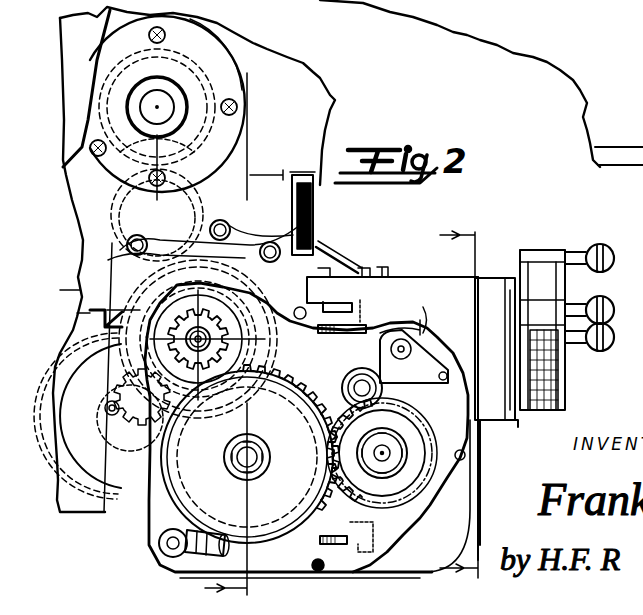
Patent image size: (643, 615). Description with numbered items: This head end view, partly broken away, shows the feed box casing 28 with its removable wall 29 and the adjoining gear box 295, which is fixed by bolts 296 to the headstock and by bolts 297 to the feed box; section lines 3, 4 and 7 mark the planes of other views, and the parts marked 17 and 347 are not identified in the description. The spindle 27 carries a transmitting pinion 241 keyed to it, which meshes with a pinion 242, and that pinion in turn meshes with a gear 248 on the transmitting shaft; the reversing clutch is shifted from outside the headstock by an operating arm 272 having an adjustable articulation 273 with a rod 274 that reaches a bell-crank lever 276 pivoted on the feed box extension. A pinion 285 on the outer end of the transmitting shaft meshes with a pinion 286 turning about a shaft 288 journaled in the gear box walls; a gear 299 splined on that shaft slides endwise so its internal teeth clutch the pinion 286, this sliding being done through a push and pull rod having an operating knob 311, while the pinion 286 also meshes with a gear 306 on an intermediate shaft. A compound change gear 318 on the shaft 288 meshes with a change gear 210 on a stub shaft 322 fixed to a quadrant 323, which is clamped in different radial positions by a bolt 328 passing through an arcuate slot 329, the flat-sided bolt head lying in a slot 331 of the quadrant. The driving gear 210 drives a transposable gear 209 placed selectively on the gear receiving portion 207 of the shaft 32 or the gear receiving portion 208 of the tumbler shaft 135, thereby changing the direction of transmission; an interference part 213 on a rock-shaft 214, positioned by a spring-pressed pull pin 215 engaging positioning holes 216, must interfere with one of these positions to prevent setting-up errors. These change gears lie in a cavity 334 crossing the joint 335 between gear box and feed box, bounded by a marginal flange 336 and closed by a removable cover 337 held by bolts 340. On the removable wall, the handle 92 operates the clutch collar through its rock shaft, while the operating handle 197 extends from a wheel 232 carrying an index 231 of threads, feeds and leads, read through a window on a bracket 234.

The transmitting pinion 241 is at (207, 83).
The spindle 27 is at (177, 117).
The section line 4 is at (167, 143).
The pinion 242 is at (195, 200).
The bolts 296 is at (198, 222).
The gear 248 is at (112, 270).
The pinion 285 is at (150, 270).
The operating arm 272 is at (306, 195).
The adjustable articulation 273 is at (308, 225).
The rod 274 is at (335, 254).
The bell-crank lever 276 is at (350, 266).
The casing 28 is at (446, 280).
The section line 7 is at (450, 406).
The spring-pressed pull pin 215 is at (386, 322).
The interference part 213 is at (420, 332).
The removable wall 29 is at (480, 318).
The bracket 234 is at (495, 272).
The handle 92 is at (615, 250).
The knob 17 is at (612, 318).
The operating handle 197 is at (570, 340).
The index 231 is at (566, 378).
The wheel 232 is at (566, 398).
The pinion 286 is at (322, 335).
The shaft 288 is at (330, 340).
The shaft 32 is at (340, 345).
The gear receiving portion 207 is at (362, 378).
The rock-shaft 214 is at (412, 384).
The positioning holes 216 is at (442, 382).
The gear 299 is at (128, 357).
The compound change gear 318 is at (150, 372).
The operating knob 311 is at (208, 372).
The stub shaft 322 is at (252, 452).
The joint 335 is at (322, 498).
The quadrant 323 is at (187, 527).
The bolt 328 is at (304, 527).
The gear receiving portion 208 is at (400, 440).
The transposable gear 209 is at (373, 485).
The bolts 340 is at (455, 462).
The tumbler shaft 135 is at (384, 455).
The bracket 347 is at (122, 440).
The gear box 295 is at (130, 500).
The gear 306 is at (143, 527).
The cover 337 is at (140, 537).
The arcuate slot 329 is at (160, 560).
The slot 331 is at (162, 560).
The change gear 210 is at (320, 541).
The cavity 334 is at (300, 575).
The marginal flange 336 is at (338, 575).
The bolts 297 is at (380, 556).
The section line 3 is at (237, 337).